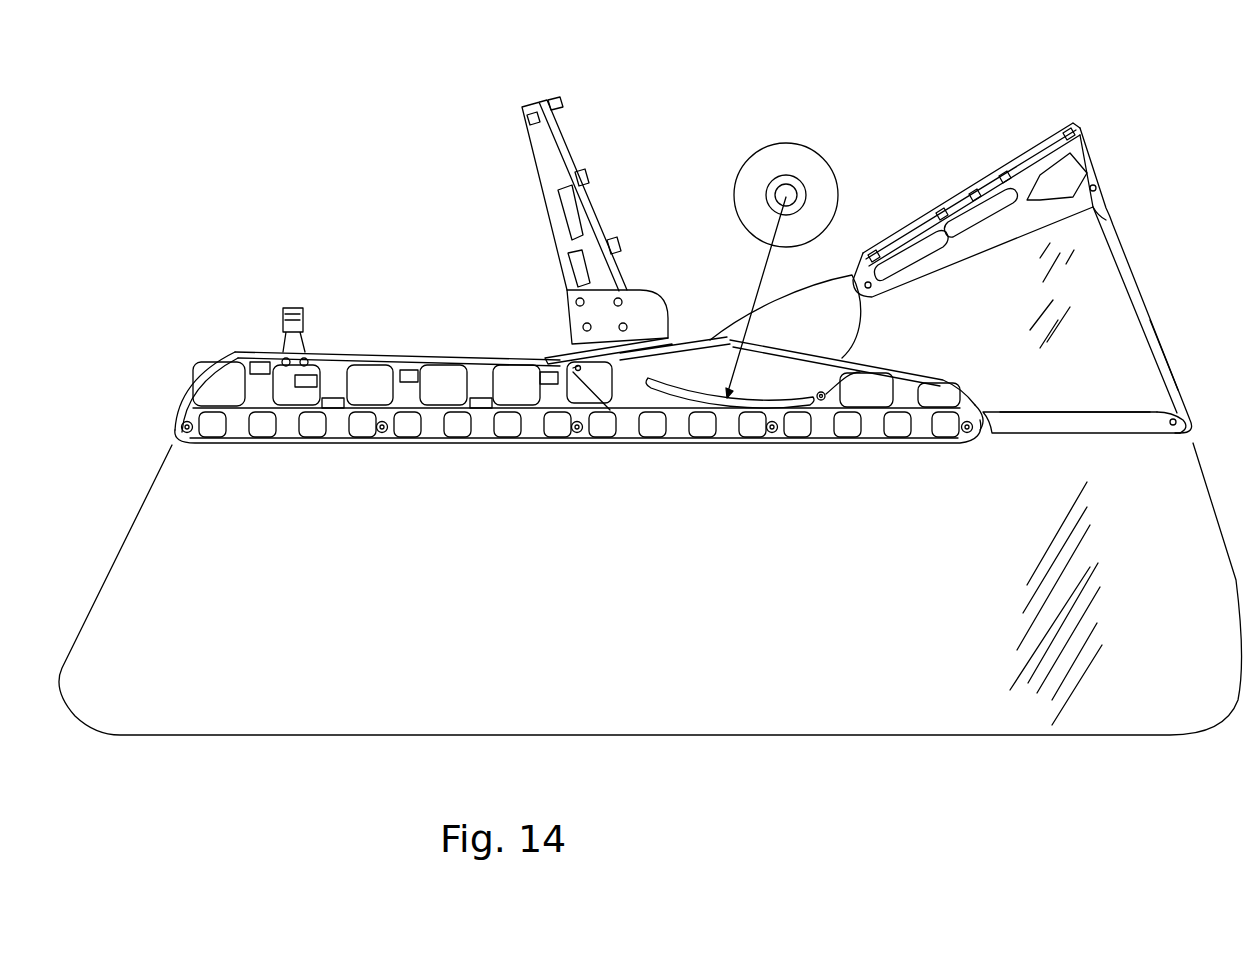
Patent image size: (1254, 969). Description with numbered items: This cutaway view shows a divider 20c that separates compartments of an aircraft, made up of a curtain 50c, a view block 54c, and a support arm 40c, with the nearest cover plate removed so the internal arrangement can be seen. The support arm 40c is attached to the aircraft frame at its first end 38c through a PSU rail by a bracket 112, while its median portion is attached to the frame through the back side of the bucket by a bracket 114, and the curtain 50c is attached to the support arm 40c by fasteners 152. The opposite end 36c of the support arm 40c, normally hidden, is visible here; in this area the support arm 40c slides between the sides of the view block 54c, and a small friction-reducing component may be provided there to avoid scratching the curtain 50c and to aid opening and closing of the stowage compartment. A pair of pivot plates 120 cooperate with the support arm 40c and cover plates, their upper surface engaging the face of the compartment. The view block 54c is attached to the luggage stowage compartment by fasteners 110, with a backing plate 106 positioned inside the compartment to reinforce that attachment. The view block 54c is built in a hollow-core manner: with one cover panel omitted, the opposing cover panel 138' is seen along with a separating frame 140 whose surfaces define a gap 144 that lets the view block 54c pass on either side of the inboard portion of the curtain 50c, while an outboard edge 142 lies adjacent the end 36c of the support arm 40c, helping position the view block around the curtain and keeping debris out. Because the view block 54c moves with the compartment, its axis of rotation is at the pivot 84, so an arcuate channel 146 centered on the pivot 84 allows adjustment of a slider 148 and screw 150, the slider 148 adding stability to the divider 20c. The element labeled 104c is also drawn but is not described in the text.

The divider 20c is at (212, 311).
The first end of the support arm 36c is at (973, 400).
The first end of the support arm 38c is at (200, 395).
The support arm 40c is at (453, 355).
The curtain 50c is at (1214, 497).
The view block 54c is at (1153, 302).
The pivot 84 is at (788, 184).
The frame segment 104c is at (1183, 377).
The backing plate 106 is at (917, 225).
The fasteners 110 is at (997, 190).
The bracket 112 is at (303, 320).
The bracket 114 is at (586, 175).
The pivot plates 120 is at (810, 296).
The opposing cover panel 138' is at (1145, 207).
The separating frame 140 is at (1193, 428).
The outboard edge 142 is at (987, 440).
The gap 144 is at (1053, 420).
The arcuate channel 146 is at (755, 401).
The slider 148 is at (816, 395).
The screw 150 is at (860, 373).
The fasteners 152 is at (380, 437).